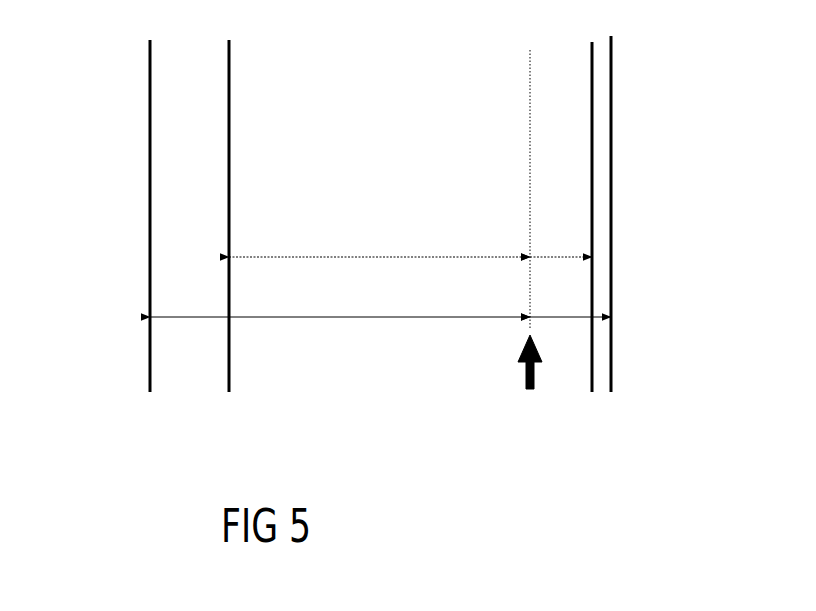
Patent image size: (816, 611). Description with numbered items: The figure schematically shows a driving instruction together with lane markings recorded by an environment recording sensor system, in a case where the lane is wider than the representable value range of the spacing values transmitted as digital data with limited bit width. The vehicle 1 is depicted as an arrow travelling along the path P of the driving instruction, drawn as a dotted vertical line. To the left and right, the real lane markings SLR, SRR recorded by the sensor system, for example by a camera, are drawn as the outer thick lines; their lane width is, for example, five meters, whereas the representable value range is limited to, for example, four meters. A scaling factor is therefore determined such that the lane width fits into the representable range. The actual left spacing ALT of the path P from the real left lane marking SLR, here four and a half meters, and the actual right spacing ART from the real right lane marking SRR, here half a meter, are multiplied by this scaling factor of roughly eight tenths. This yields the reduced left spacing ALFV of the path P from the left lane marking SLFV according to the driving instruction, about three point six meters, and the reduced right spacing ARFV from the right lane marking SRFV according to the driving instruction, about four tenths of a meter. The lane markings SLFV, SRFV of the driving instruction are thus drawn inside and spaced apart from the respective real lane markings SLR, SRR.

The real left lane marking SLR is at (150, 215).
The left lane marking according to the driving instruction SLFV is at (229, 107).
The right lane marking according to the driving instruction SRFV is at (592, 75).
The real right lane marking SRR is at (611, 188).
The path P is at (531, 169).
The reduced left spacing ALFV is at (350, 257).
The reduced right spacing ARFV is at (547, 255).
The actual left spacing ALT is at (328, 320).
The actual right spacing ART is at (582, 319).
The vehicle 1 is at (523, 363).